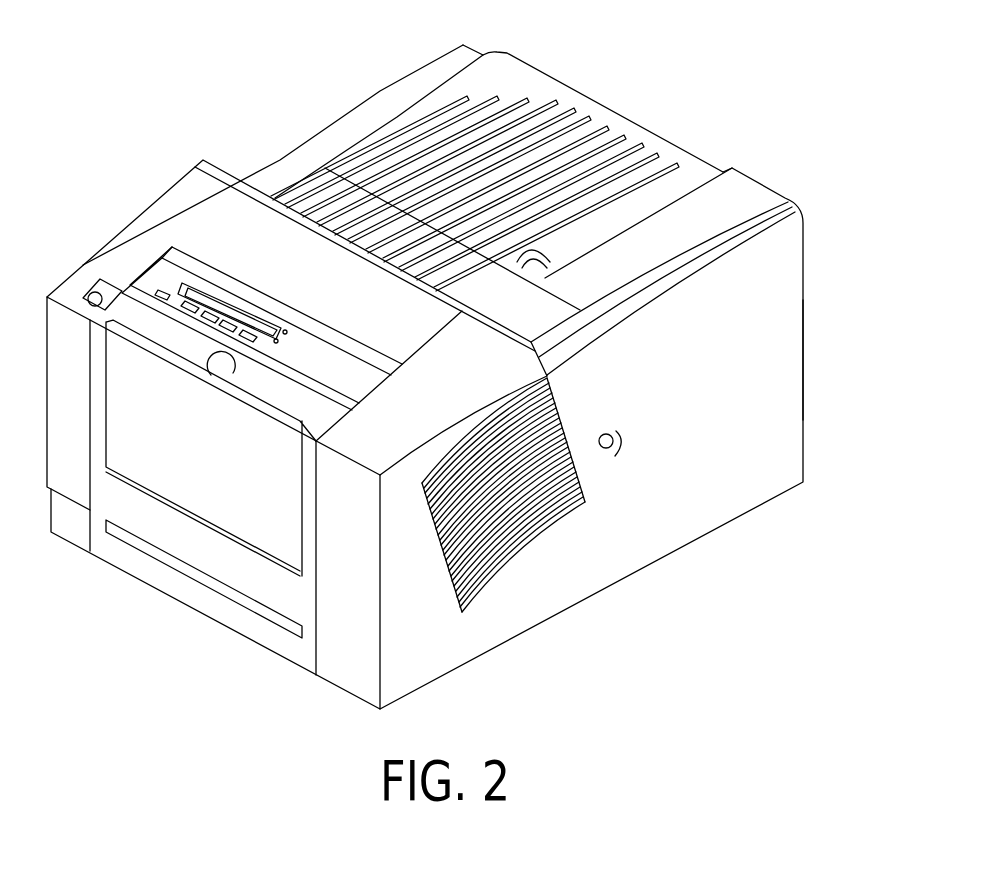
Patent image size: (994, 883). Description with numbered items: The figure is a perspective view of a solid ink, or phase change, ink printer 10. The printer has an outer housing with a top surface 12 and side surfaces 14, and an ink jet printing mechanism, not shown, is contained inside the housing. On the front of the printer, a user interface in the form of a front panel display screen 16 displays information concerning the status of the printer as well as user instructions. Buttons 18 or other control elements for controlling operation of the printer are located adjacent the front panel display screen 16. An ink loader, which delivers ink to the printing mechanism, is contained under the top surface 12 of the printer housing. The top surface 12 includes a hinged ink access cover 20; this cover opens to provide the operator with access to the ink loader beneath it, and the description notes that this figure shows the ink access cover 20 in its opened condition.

The solid ink printer 10 is at (806, 162).
The top surface 12 is at (743, 190).
The side surfaces 14 is at (777, 312).
The front panel display screen 16 is at (197, 284).
The buttons 18 is at (162, 291).
The hinged ink access cover 20 is at (512, 80).